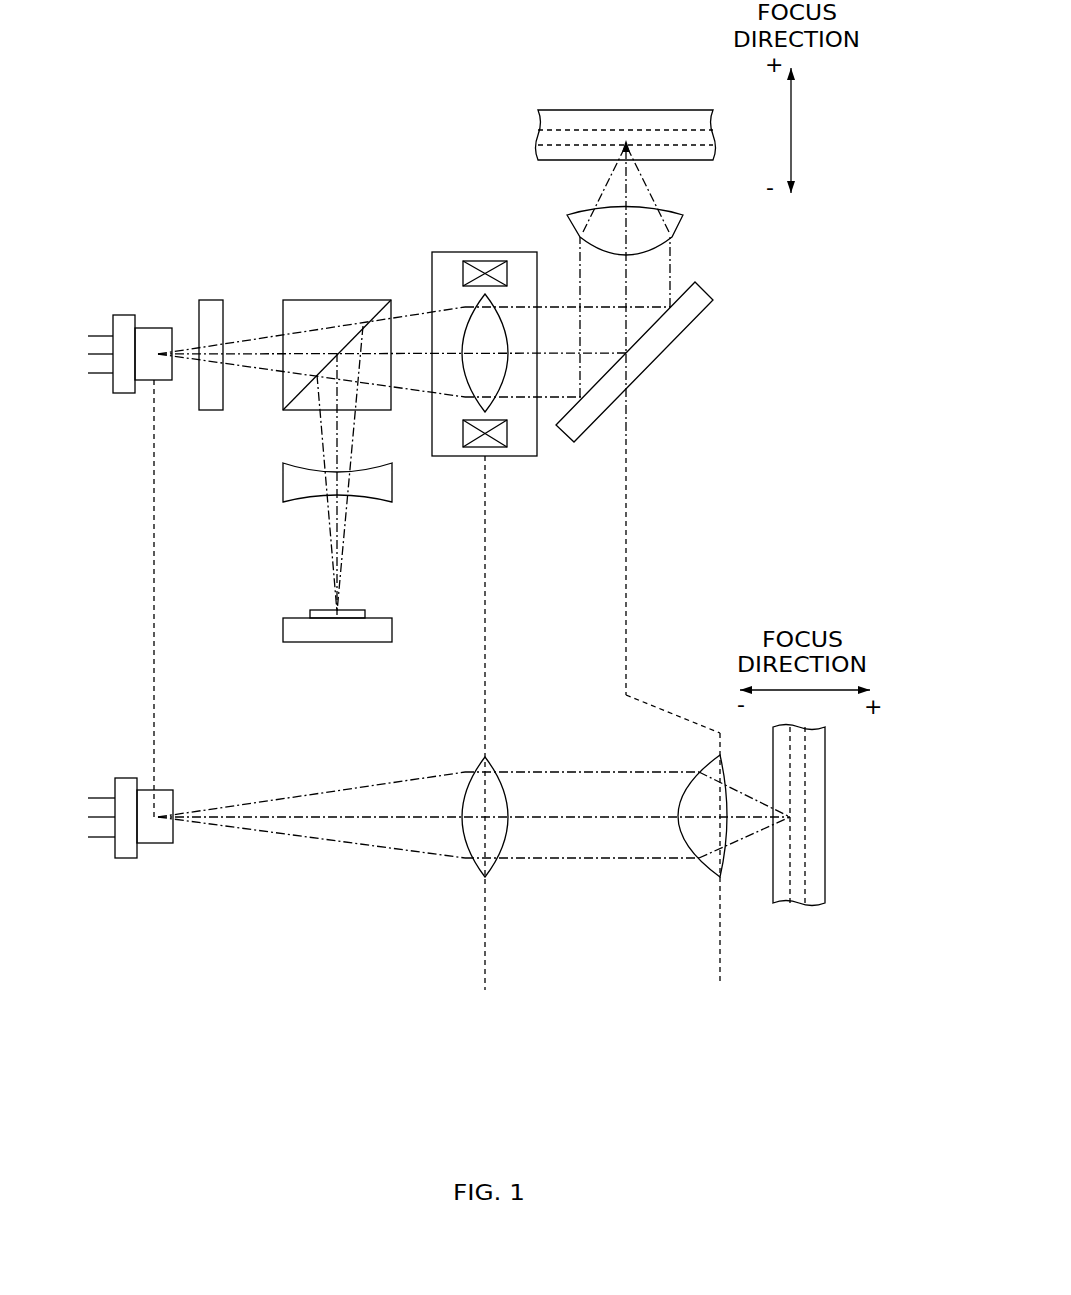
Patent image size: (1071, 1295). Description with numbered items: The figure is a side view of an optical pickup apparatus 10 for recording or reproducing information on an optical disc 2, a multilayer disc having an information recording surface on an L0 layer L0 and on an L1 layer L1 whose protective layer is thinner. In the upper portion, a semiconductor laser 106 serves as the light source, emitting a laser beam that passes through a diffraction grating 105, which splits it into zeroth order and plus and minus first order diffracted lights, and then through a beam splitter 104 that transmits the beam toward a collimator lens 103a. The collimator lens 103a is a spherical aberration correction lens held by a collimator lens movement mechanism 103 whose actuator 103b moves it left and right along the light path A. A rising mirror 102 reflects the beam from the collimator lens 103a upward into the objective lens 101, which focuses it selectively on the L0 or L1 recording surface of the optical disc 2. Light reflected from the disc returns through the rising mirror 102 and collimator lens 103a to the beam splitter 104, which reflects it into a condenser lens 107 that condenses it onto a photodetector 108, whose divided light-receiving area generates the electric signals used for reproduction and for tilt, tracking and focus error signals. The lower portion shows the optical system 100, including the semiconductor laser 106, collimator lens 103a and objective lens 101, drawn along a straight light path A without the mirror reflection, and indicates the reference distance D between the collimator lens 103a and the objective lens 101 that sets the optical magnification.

The optical disc 2 is at (640, 110).
The optical pickup apparatus 10 is at (683, 422).
The optical system 100 is at (573, 738).
The objective lens 101 is at (675, 232).
The rising mirror 102 is at (645, 370).
The collimator lens movement mechanism 103 is at (460, 458).
The collimator lens 103a is at (465, 323).
The actuator 103b is at (475, 260).
The beam splitter 104 is at (322, 298).
The diffraction grating 105 is at (208, 298).
The semiconductor laser 106 is at (152, 327).
The condenser lens 107 is at (283, 483).
The photodetector 108 is at (283, 622).
The L0 layer L0 is at (713, 130).
The L1 layer L1 is at (713, 145).
The light path A is at (637, 273).
The reference distance D is at (720, 967).